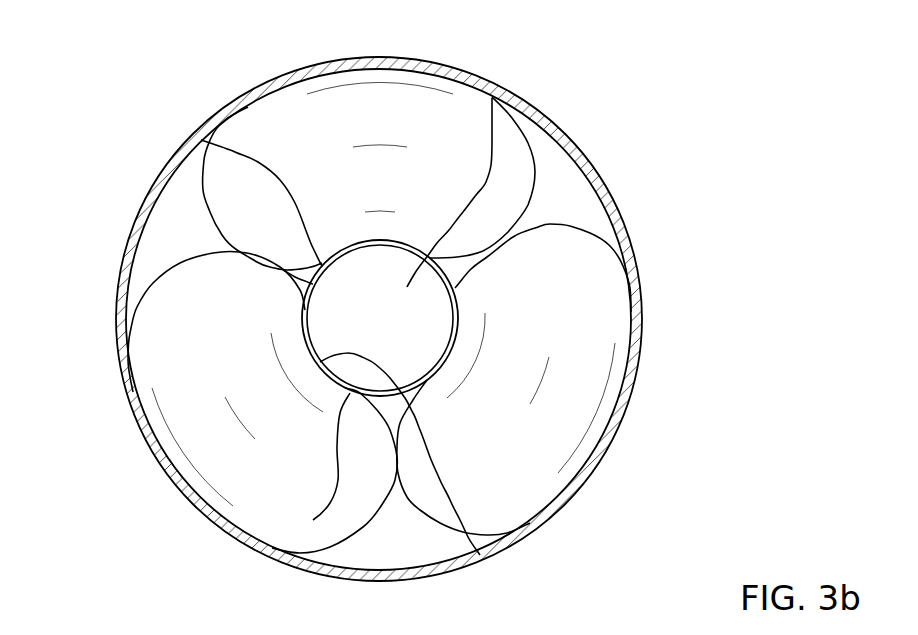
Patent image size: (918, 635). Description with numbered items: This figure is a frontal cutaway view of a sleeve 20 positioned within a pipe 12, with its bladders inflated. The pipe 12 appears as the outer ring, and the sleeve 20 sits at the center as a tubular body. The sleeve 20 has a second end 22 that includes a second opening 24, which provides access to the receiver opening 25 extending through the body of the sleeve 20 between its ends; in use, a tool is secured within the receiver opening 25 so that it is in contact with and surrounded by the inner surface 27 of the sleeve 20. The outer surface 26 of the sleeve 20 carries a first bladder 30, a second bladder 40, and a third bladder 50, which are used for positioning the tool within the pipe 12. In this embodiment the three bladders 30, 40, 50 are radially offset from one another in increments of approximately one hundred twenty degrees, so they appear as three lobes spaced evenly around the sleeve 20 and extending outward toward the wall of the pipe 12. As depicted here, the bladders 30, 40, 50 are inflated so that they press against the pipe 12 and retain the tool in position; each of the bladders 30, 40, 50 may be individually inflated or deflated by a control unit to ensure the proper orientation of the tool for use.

The pipe 12 is at (640, 294).
The sleeve 20 is at (450, 286).
The second end 22 is at (313, 520).
The second opening 24 is at (201, 140).
The receiver opening 25 is at (492, 98).
The outer surface 26 is at (203, 196).
The inner surface 27 is at (480, 555).
The first bladder 30 is at (180, 330).
The second bladder 40 is at (513, 490).
The third bladder 50 is at (277, 150).